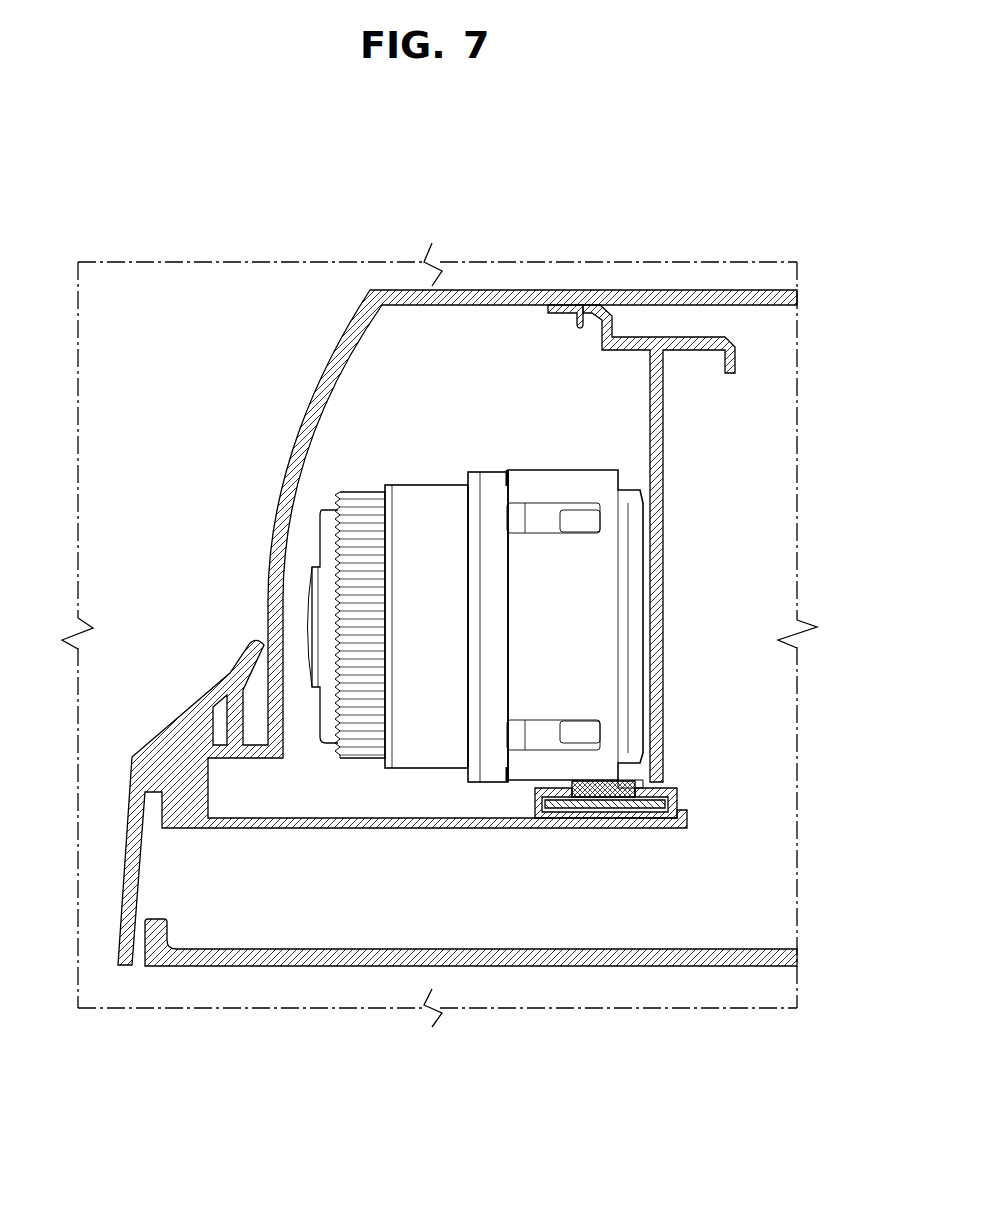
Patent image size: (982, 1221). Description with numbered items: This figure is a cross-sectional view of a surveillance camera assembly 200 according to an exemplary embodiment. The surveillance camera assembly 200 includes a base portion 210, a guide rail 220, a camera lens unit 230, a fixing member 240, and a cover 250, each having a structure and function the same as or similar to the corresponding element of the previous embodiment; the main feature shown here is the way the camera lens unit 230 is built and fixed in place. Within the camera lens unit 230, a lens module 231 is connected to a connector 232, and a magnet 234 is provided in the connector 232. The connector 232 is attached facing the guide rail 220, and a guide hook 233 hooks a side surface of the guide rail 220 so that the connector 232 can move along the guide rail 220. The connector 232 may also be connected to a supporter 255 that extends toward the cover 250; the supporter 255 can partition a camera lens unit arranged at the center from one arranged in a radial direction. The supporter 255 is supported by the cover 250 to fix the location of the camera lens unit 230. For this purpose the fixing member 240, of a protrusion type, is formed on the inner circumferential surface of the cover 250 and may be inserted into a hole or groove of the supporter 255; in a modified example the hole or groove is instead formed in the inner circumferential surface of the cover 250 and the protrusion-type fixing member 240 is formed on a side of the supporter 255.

The surveillance camera assembly 200 is at (793, 199).
The base portion 210 is at (283, 968).
The guide rail 220 is at (600, 797).
The camera lens unit 230 is at (588, 710).
The lens module 231 is at (427, 505).
The connector 232 is at (648, 808).
The guide hook 233 is at (552, 797).
The magnet 234 is at (632, 788).
The fixing member 240 is at (578, 310).
The cover 250 is at (347, 356).
The supporter 255 is at (657, 360).